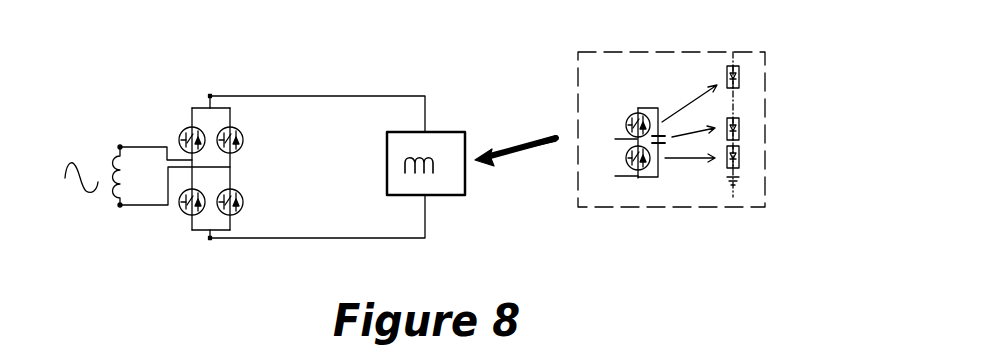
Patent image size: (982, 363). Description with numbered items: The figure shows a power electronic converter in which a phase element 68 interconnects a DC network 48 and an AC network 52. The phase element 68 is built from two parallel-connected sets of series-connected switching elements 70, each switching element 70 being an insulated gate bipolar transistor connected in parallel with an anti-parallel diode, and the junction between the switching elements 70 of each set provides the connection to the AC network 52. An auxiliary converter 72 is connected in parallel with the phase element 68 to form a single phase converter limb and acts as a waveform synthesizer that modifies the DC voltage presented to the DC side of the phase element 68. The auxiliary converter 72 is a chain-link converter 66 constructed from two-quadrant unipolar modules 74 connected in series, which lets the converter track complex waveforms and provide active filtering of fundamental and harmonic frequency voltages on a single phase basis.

The DC network 48 is at (432, 96).
The AC network 52 is at (70, 188).
The chain-link converter 66 is at (745, 130).
The phase element 68 is at (191, 174).
The series-connected switching elements 70 is at (250, 131).
The auxiliary converter 72 is at (390, 142).
The 2-quadrant unipolar modules 74 is at (635, 182).